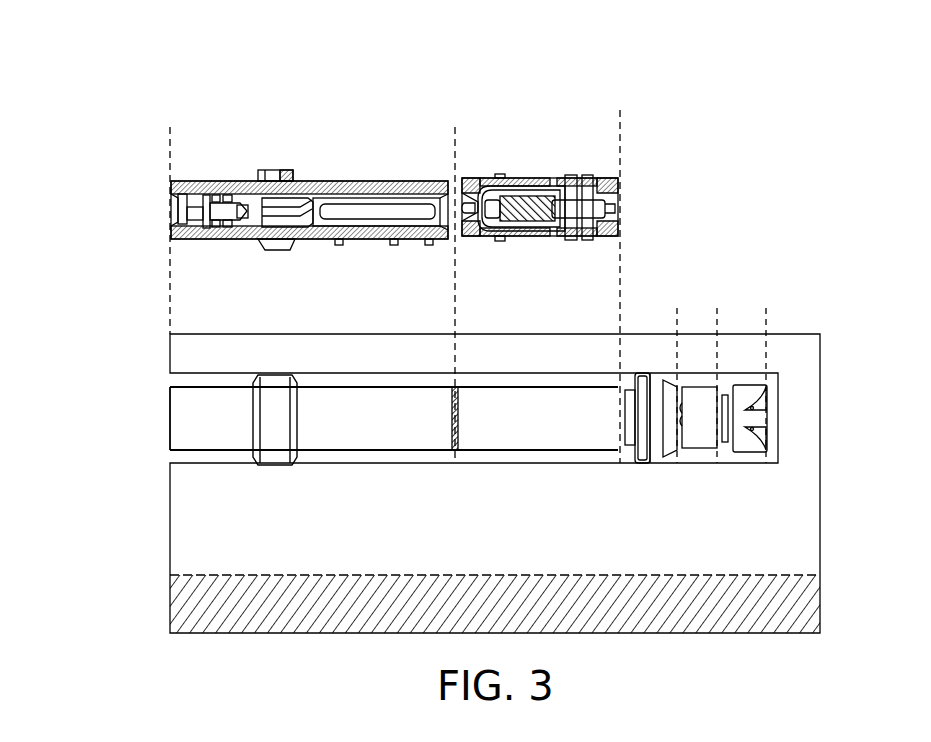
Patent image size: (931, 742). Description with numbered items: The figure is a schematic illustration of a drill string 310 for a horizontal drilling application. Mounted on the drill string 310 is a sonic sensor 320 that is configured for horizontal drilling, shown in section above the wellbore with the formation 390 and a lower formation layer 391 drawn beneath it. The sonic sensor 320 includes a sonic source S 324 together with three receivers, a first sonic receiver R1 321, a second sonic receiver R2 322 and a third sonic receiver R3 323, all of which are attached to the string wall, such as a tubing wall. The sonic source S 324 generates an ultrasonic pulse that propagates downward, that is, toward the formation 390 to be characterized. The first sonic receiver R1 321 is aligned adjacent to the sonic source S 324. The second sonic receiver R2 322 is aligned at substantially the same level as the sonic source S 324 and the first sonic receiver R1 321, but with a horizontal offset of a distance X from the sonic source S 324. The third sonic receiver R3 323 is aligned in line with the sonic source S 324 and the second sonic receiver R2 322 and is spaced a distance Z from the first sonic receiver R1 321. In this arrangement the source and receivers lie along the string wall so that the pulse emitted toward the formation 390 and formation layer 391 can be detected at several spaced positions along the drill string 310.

The drill string 310 is at (160, 92).
The sonic sensor 320 is at (370, 108).
The first sonic receiver 321 is at (339, 245).
The second sonic receiver 322 is at (394, 239).
The third sonic receiver 323 is at (436, 241).
The sonic source 324 is at (316, 252).
The formation 390 is at (178, 470).
The formation layer 391 is at (178, 580).
The sonic source S is at (321, 265).
The first sonic receiver R1 is at (357, 269).
The second sonic receiver R2 is at (394, 269).
The third sonic receiver R3 is at (432, 269).